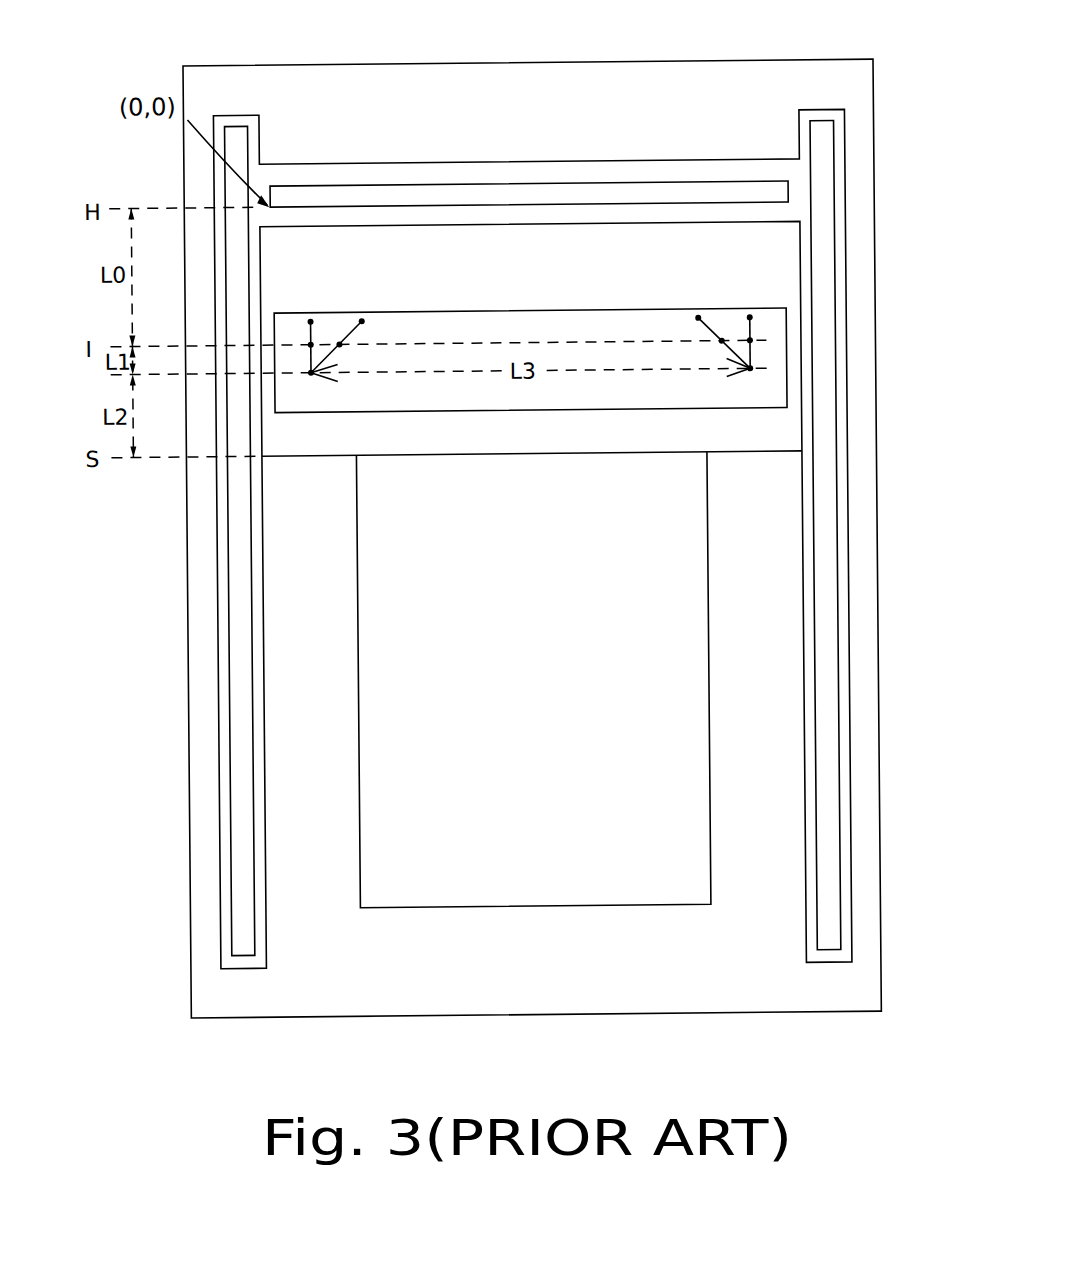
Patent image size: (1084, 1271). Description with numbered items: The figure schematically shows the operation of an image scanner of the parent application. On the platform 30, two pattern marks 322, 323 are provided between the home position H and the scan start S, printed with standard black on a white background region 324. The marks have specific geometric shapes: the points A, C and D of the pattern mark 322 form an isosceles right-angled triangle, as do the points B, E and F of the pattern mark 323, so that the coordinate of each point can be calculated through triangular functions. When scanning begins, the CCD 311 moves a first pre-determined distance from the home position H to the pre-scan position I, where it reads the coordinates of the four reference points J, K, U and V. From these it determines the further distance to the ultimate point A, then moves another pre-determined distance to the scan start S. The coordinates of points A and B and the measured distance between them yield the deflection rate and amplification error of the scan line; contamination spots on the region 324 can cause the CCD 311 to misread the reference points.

The platform 30 is at (526, 113).
The CCD 311 is at (773, 197).
The pattern mark 322 is at (308, 338).
The pattern mark 323 is at (749, 337).
The white background region 324 is at (508, 328).